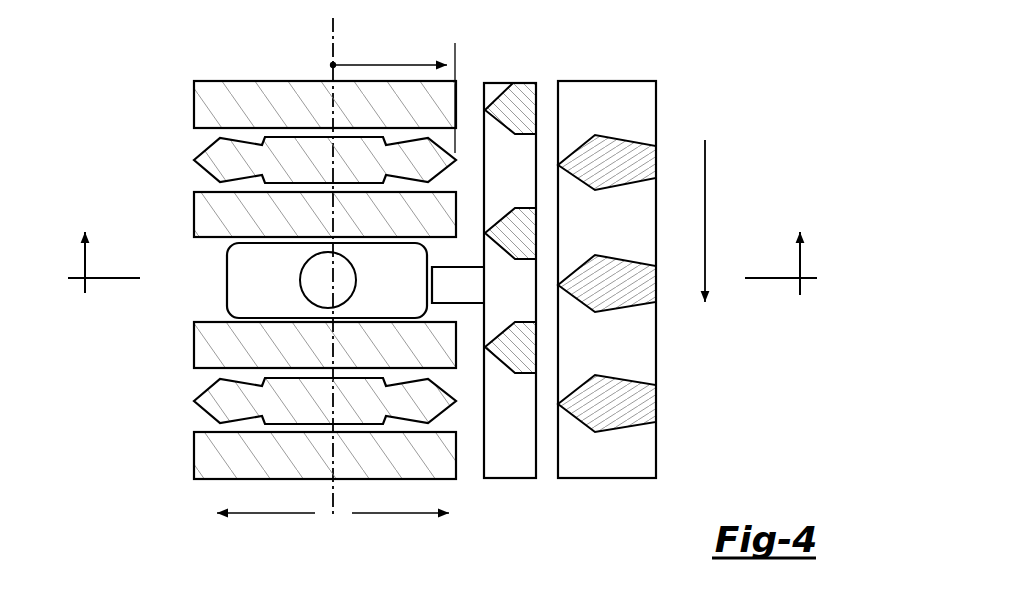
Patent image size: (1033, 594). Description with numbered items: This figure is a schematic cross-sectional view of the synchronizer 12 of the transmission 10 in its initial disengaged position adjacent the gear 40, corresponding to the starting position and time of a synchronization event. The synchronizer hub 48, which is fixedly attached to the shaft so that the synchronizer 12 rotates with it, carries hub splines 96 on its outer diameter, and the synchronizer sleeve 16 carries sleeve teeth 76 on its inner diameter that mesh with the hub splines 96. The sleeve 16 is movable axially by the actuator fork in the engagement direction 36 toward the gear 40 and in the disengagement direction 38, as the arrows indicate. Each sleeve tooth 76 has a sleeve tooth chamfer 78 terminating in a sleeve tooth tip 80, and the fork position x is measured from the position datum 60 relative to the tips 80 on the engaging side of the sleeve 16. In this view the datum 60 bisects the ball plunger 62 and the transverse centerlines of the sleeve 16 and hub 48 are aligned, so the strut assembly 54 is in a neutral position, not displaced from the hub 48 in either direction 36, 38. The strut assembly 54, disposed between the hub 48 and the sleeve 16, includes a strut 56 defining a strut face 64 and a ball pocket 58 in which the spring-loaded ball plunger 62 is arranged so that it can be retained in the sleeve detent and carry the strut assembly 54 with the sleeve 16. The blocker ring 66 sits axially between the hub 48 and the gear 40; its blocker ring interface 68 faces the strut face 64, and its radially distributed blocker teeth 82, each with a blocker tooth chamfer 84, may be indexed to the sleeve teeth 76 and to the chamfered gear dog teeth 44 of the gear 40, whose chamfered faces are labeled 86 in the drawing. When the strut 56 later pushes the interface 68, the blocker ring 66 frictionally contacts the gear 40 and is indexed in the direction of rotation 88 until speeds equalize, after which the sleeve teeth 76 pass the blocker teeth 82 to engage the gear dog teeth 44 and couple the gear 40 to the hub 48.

The transmission 10 is at (733, 56).
The synchronizer 12 is at (81, 124).
The synchronizer sleeve 16 is at (186, 145).
The engagement direction 36 is at (396, 514).
The disengagement direction 38 is at (275, 514).
The gear 40 is at (626, 492).
The gear dog teeth 44 is at (657, 150).
The synchronizer hub 48 is at (188, 102).
The strut assembly 54 is at (191, 258).
The strut 56 is at (227, 292).
The ball pocket 58 is at (348, 298).
The position datum 60 is at (330, 38).
The ball plunger 62 is at (300, 281).
The strut face 64 is at (427, 255).
The blocker ring 66 is at (521, 499).
The blocker ring interface 68 is at (436, 289).
The sleeve teeth 76 is at (188, 170).
The sleeve tooth chamfer 78 is at (440, 172).
The sleeve tooth tip 80 is at (449, 160).
The blocker teeth 82 is at (537, 100).
The blocker tooth chamfer 84 is at (498, 128).
The track tooth face 86 is at (588, 140).
The direction of rotation 88 is at (705, 197).
The hub splines 96 is at (203, 81).